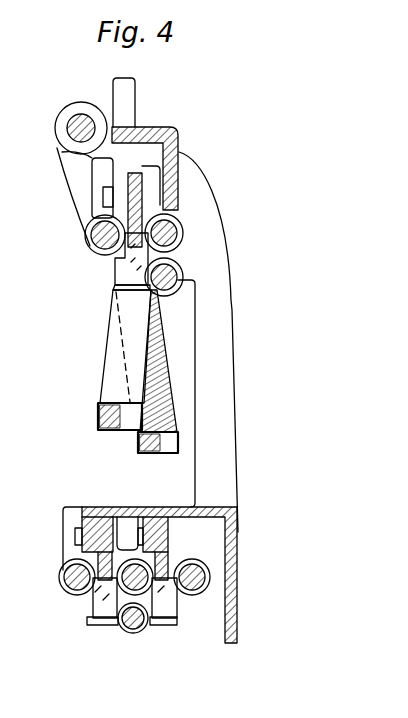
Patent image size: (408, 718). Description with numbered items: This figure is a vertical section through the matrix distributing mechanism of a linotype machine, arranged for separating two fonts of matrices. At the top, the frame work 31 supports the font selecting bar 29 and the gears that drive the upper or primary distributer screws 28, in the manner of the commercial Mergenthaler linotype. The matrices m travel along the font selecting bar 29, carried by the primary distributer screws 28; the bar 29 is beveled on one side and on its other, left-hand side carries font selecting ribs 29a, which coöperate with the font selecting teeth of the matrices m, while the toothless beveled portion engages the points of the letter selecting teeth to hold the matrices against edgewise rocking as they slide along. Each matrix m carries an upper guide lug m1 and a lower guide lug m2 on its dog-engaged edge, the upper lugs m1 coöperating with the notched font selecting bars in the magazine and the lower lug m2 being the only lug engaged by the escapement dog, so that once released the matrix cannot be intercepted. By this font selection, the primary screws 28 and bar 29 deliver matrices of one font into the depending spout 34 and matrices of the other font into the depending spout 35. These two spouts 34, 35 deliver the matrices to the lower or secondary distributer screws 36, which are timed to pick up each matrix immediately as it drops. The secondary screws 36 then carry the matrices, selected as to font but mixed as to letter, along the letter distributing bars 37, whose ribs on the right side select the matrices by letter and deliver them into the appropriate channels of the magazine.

The frame work 31 is at (147, 130).
The font selecting bar 29 is at (150, 197).
The primary distributer screws 28 is at (150, 285).
The upper guide lugs m1 is at (143, 250).
The font selecting ribs 29a is at (110, 265).
The matrices m is at (112, 281).
The lower guide lug m2 is at (113, 283).
The depending spout 34 is at (124, 360).
The depending spout 35 is at (160, 442).
The letter distributing bars 37 is at (118, 550).
The secondary distributer screws 36 is at (206, 580).